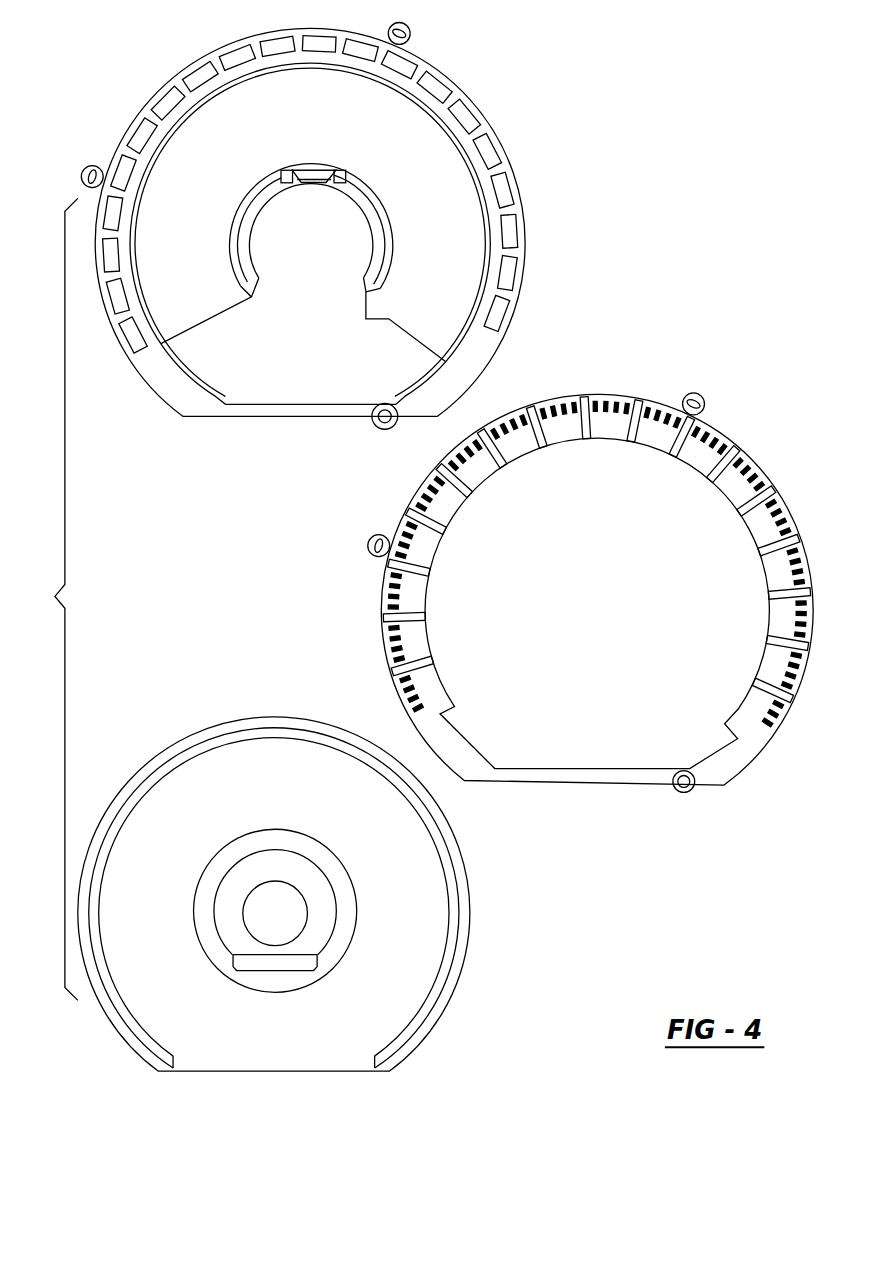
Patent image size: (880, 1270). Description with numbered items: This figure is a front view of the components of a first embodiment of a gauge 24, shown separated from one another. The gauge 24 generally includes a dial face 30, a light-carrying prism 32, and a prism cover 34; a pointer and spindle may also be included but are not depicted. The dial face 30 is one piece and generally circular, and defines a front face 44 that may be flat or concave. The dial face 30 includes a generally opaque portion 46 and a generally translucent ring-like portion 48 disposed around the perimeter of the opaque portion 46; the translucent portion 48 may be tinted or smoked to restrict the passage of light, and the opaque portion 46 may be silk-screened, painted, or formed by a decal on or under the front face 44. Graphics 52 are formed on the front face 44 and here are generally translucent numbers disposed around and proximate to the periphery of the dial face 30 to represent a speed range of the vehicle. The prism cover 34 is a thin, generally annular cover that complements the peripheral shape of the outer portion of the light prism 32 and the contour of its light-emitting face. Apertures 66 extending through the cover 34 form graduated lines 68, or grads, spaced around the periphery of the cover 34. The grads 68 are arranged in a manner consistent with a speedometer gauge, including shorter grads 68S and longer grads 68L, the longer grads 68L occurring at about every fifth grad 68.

The gauge 24 is at (53, 599).
The dial face 30 is at (311, 914).
The light-carrying prism 32 is at (505, 110).
The prism cover 34 is at (758, 716).
The front face 44 is at (180, 1026).
The opaque portion 46 is at (162, 1012).
The translucent ring portion 48 is at (458, 965).
The graphics 52 is at (269, 791).
The apertures 66 is at (563, 544).
The graduated lines 68 is at (562, 541).
The shorter grads 68S is at (720, 430).
The longer grads 68L is at (728, 458).